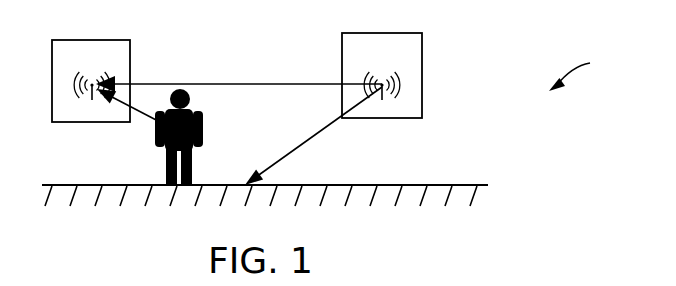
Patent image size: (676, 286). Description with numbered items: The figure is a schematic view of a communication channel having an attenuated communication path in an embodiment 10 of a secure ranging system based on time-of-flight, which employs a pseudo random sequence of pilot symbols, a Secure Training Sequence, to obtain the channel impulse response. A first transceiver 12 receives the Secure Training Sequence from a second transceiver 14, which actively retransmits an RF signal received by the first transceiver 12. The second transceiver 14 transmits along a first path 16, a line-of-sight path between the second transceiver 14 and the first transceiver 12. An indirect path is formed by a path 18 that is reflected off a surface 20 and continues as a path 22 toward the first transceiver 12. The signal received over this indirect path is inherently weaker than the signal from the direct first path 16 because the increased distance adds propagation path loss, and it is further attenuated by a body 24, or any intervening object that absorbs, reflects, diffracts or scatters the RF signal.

The embodiment 10 is at (587, 69).
The first transceiver 12 is at (123, 62).
The second transceiver 14 is at (417, 55).
The first path 16 is at (253, 83).
The path 18 is at (310, 135).
The surface 20 is at (434, 185).
The path 22 is at (146, 121).
The body 24 is at (200, 117).